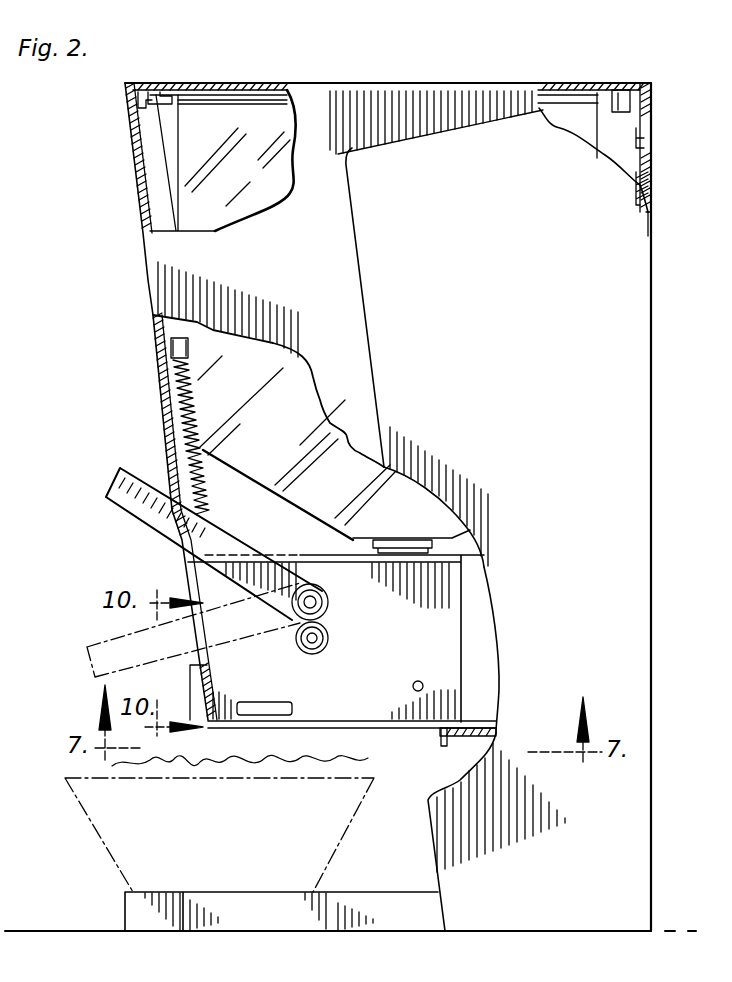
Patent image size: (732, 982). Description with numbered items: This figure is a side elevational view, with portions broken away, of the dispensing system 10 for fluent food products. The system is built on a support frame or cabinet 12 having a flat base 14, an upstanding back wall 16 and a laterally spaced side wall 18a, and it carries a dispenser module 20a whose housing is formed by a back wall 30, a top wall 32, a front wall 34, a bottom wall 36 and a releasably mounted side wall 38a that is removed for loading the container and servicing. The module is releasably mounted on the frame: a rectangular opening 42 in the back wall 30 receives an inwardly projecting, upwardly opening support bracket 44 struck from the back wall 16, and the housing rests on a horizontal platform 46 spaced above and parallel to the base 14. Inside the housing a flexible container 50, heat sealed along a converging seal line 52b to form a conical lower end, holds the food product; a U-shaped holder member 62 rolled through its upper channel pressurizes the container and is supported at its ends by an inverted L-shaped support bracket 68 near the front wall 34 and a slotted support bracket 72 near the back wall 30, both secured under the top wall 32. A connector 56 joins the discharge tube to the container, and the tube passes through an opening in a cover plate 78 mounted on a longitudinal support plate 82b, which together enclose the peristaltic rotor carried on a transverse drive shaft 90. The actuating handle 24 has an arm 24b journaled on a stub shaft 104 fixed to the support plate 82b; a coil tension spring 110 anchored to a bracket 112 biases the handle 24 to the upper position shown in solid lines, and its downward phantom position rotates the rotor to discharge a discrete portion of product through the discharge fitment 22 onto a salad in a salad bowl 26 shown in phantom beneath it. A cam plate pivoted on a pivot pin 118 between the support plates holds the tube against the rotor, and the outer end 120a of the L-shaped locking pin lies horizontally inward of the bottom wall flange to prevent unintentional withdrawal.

The dispensing system 10 is at (108, 149).
The support frame or cabinet 12 is at (653, 343).
The flat base 14 is at (128, 900).
The back wall 16 is at (647, 198).
The side wall 18a is at (620, 270).
The dispenser module 20a is at (340, 84).
The discharge fitment 22 is at (186, 693).
The actuating handle 24 is at (118, 476).
The arm of operating handle 24b is at (142, 522).
The salad bowl 26 is at (102, 842).
The back or rear wall 30 is at (642, 182).
The top wall 32 is at (242, 83).
The front wall 34 is at (143, 215).
The bottom wall 36 is at (352, 729).
The side wall 38a is at (462, 104).
The rectangular opening 42 is at (645, 160).
The support bracket 44 is at (644, 138).
The horizontal platform 46 is at (472, 740).
The flexible container 50 is at (262, 138).
The seal line 52b is at (244, 490).
The coupling or connector 56 is at (364, 536).
The U-shaped holder member 62 is at (170, 92).
The support bracket 68 is at (137, 106).
The support bracket 72 is at (636, 116).
The cover plate 78 is at (304, 554).
The longitudinal support plate 82b is at (446, 620).
The drive shaft 90 is at (313, 646).
The stub shaft 104 is at (322, 604).
The coil tension spring 110 is at (182, 392).
The bracket 112 is at (170, 346).
The pivot pin 118 is at (414, 690).
The outer end of locking pin 120a is at (285, 686).